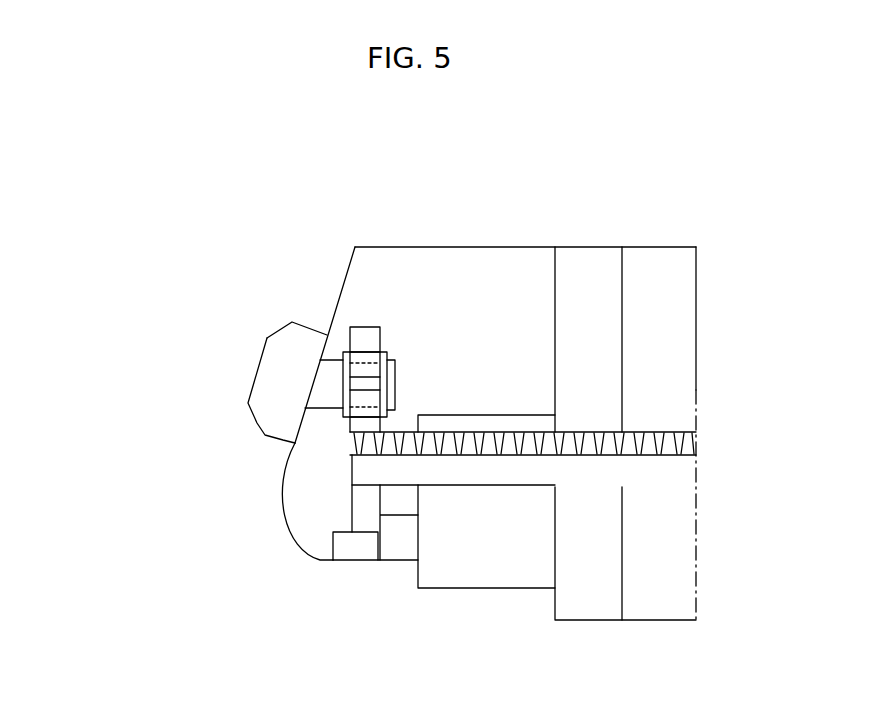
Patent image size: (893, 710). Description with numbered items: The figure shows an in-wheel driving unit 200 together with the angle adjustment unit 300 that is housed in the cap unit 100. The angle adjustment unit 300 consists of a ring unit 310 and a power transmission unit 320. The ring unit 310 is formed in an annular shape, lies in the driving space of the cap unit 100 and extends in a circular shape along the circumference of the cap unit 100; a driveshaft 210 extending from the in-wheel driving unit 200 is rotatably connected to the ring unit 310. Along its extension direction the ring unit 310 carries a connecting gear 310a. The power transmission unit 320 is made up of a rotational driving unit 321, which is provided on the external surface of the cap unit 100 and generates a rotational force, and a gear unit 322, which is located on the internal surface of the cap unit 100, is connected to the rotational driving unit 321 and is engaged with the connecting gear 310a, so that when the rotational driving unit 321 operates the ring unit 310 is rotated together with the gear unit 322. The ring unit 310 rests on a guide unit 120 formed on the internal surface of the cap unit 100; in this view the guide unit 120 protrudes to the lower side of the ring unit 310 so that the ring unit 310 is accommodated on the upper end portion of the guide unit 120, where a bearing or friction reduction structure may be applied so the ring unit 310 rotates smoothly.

The cap unit 100 is at (377, 244).
The guide unit 120 is at (348, 561).
The in-wheel driving unit 200 is at (668, 325).
The driveshaft 210 is at (398, 502).
The angle adjustment unit 300 is at (260, 544).
The ring unit 310 is at (505, 475).
The connecting gear 310a is at (495, 430).
The power transmission unit 320 is at (207, 257).
The rotational driving unit 321 is at (268, 380).
The gear unit 322 is at (362, 338).